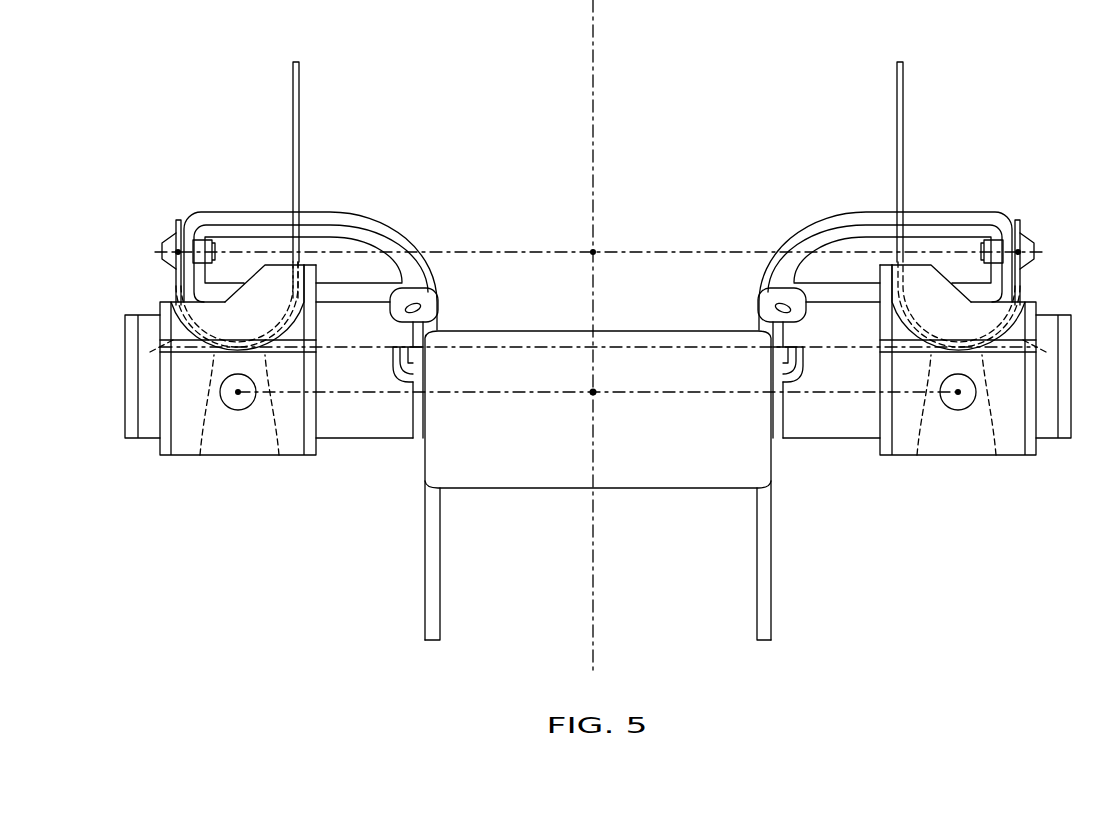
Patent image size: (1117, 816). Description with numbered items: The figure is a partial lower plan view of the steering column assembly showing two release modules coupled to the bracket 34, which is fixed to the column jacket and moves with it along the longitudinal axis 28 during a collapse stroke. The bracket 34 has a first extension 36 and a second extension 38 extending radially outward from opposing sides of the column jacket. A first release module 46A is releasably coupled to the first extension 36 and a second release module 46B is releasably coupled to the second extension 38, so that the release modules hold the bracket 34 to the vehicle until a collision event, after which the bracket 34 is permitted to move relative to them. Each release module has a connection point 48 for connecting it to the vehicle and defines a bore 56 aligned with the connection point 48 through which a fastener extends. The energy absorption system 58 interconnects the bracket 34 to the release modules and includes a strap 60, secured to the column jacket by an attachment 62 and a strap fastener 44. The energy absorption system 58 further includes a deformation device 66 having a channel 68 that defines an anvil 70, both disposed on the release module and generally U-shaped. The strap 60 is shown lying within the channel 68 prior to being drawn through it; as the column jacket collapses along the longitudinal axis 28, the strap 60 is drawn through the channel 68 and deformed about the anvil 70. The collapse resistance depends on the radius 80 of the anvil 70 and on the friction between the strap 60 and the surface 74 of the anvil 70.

The longitudinal axis 28 is at (596, 587).
The bracket 34 is at (532, 330).
The first extension 36 is at (857, 211).
The second extension 38 is at (323, 211).
The strap fastener 44 is at (162, 256).
The first release module 46A is at (943, 456).
The second release module 46B is at (253, 456).
The connection point 48 is at (238, 394).
The bore 56 is at (254, 398).
The energy absorption system 58 is at (244, 264).
The strap 60 is at (299, 130).
The attachment 62 is at (178, 252).
The deformation device 66 is at (252, 355).
The channel 68 is at (150, 352).
The anvil 70 is at (230, 338).
The surface of the anvil 74 is at (200, 357).
The radius 80 is at (292, 318).